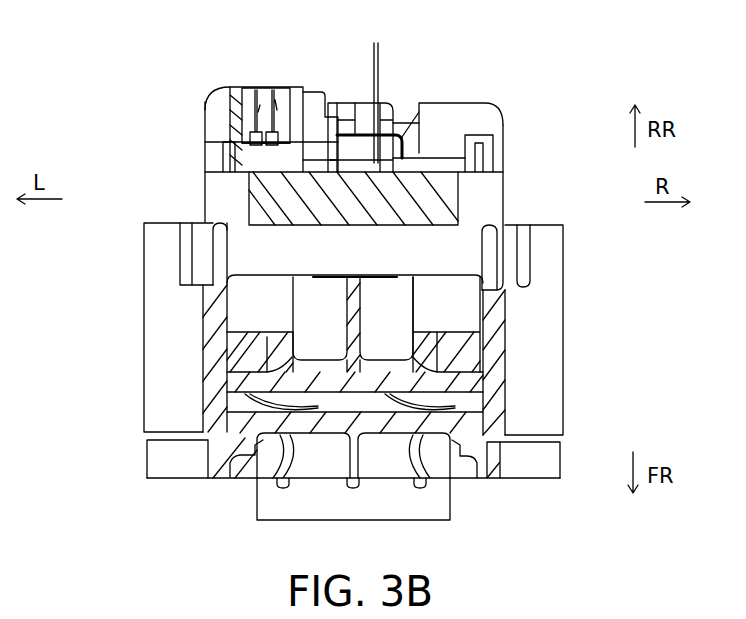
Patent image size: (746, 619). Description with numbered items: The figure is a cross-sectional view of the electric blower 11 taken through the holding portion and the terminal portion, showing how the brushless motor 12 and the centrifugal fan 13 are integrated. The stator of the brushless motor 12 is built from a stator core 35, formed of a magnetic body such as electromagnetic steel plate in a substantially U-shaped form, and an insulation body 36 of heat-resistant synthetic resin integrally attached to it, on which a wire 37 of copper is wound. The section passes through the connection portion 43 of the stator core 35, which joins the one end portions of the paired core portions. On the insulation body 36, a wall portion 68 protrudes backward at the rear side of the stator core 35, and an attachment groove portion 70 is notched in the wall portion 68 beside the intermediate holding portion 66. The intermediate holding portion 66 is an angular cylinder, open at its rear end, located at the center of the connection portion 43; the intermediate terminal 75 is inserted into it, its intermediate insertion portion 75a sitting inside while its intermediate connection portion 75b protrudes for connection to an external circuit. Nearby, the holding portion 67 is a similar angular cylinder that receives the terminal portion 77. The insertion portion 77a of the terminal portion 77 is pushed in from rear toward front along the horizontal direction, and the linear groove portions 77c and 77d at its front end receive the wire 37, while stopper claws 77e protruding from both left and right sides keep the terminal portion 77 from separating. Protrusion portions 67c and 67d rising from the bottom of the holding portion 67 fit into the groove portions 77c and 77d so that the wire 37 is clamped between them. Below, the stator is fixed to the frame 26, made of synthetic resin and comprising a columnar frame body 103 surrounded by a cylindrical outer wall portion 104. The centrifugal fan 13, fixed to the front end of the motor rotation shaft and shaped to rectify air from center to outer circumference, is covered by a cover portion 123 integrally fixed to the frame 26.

The electric blower 11 is at (436, 47).
The brushless motor 12 is at (506, 74).
The centrifugal fan 13 is at (420, 483).
The frame 26 is at (552, 307).
The stator core 35 is at (460, 202).
The insulation body 36 is at (273, 153).
The wire 37 is at (200, 140).
The connection portion 43 is at (467, 160).
The intermediate holding portion 66 is at (385, 103).
The holding portion 67 is at (297, 88).
The protrusion portion 67c is at (223, 158).
The protrusion portion 67d is at (278, 138).
The wall portion 68 is at (505, 127).
The attachment groove portion 70 is at (463, 110).
The intermediate terminal 75 is at (378, 52).
The intermediate insertion portion 75a is at (353, 102).
The intermediate connection portion 75b is at (377, 82).
The terminal portion 77 is at (245, 110).
The insertion portion 77a is at (230, 100).
The groove portion 77c is at (252, 86).
The groove portion 77d is at (273, 88).
The stopper claw 77e is at (242, 115).
The frame body 103 is at (207, 358).
The outer wall portion 104 is at (152, 302).
The cover portion 123 is at (552, 465).